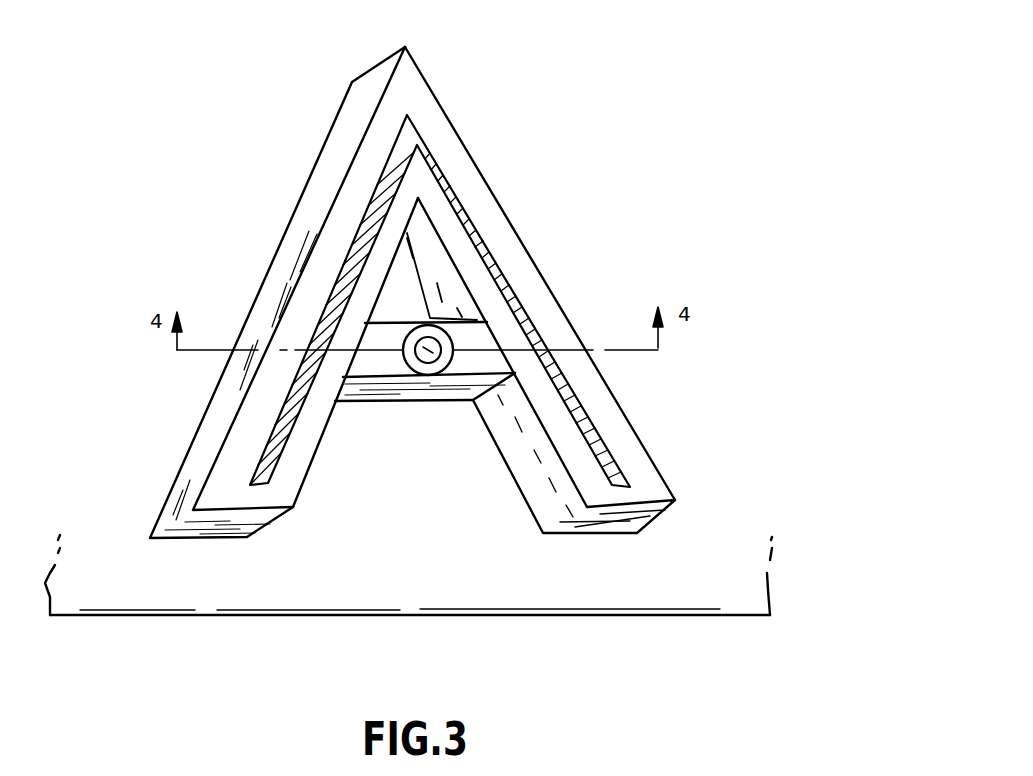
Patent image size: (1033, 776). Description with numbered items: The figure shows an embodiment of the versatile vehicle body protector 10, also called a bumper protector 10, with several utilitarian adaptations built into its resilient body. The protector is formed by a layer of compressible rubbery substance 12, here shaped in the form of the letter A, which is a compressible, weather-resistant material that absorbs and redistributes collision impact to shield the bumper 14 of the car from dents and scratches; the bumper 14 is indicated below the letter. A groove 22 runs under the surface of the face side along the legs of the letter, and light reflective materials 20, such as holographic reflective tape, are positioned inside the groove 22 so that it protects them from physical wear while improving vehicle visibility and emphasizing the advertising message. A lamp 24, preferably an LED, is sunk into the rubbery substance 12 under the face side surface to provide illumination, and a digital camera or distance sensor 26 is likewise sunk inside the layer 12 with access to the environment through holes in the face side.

The body protector 10 is at (429, 301).
The layer of compressible rubbery substance 12 is at (533, 477).
The bumper 14 is at (685, 595).
The light reflective materials 20 is at (618, 475).
The groove 22 is at (507, 293).
The lamp 24 is at (433, 375).
The distance sensor 26 is at (451, 358).